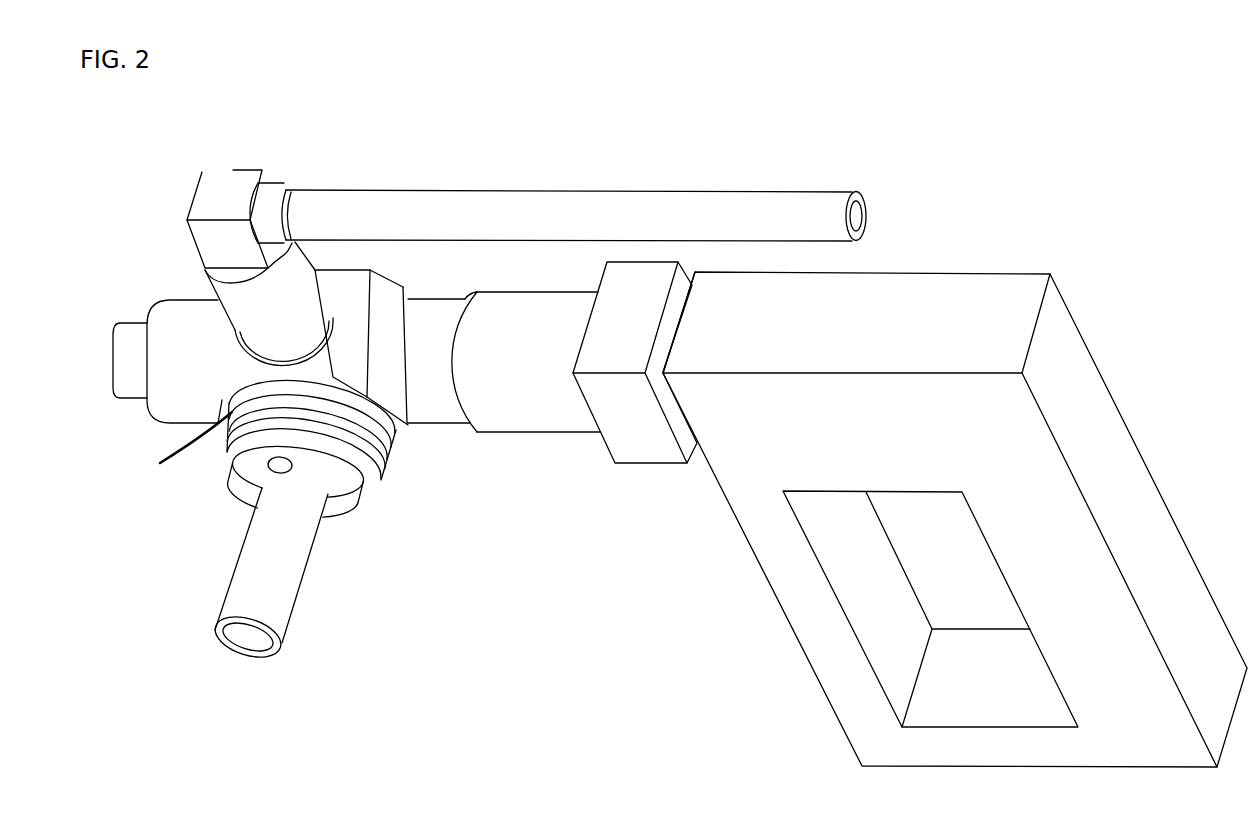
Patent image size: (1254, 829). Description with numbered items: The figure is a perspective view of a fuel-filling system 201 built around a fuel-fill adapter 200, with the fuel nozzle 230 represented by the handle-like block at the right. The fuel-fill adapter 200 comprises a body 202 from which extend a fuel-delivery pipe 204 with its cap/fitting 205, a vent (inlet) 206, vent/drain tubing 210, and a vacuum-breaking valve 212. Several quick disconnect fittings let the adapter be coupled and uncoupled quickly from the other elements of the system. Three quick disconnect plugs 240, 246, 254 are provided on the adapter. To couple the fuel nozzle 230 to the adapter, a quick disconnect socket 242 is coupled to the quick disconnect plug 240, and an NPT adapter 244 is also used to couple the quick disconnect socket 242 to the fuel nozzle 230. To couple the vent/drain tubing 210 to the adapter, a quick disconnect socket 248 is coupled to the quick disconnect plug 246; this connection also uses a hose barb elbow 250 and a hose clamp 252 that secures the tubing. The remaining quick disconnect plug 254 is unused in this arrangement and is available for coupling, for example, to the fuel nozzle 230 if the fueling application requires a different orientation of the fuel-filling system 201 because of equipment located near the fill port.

The fuel-fill adapter 200 is at (511, 584).
The fuel-filling system 201 is at (934, 146).
The body 202 is at (365, 358).
The fuel-delivery pipe 204 is at (268, 607).
The cap/fitting 205 is at (337, 467).
The vent (inlet) 206 is at (279, 470).
The vent/drain tubing 210 is at (575, 231).
The vacuum-breaking valve 212 is at (357, 260).
The fuel nozzle 230 is at (1077, 353).
The quick disconnect plug 240 is at (438, 368).
The quick disconnect socket 242 is at (540, 382).
The NPT adapter 244 is at (653, 431).
The quick disconnect plug 246 is at (178, 453).
The quick disconnect socket 248 is at (297, 323).
The hose barb elbow 250 is at (213, 183).
The hose clamp 252 is at (273, 200).
The quick disconnect plug 254 is at (202, 363).